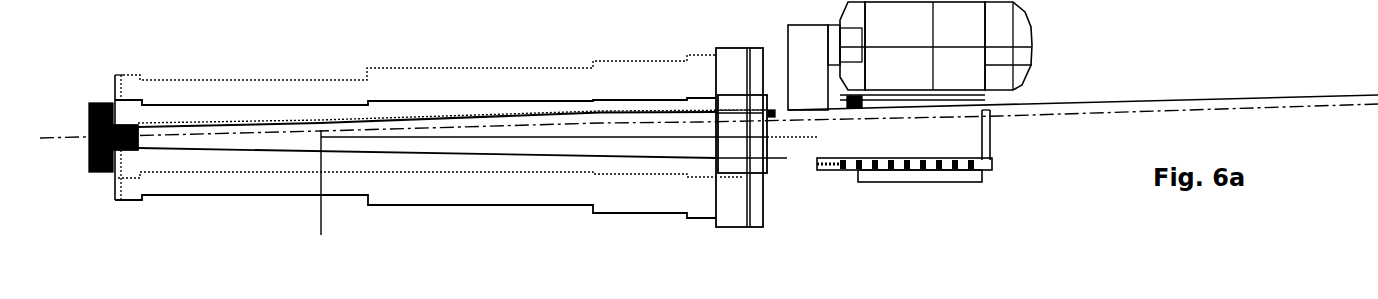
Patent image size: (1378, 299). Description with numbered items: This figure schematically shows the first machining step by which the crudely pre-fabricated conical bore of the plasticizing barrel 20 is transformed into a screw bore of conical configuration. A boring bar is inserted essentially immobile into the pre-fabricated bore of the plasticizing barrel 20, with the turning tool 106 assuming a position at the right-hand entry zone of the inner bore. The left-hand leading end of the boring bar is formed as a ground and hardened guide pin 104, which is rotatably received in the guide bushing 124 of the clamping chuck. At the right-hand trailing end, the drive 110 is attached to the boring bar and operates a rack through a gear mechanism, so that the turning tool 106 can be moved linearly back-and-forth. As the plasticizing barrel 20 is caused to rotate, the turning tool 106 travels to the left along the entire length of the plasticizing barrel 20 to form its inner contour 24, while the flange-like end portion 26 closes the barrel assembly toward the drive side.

The plasticizing barrel 20 is at (533, 192).
The inner contour 24 is at (434, 152).
The flange 26 is at (656, 137).
The guide pin 104 is at (99, 173).
The turning tool 106 is at (772, 116).
The drive 110 is at (968, 65).
The guide bushing 124 is at (93, 102).